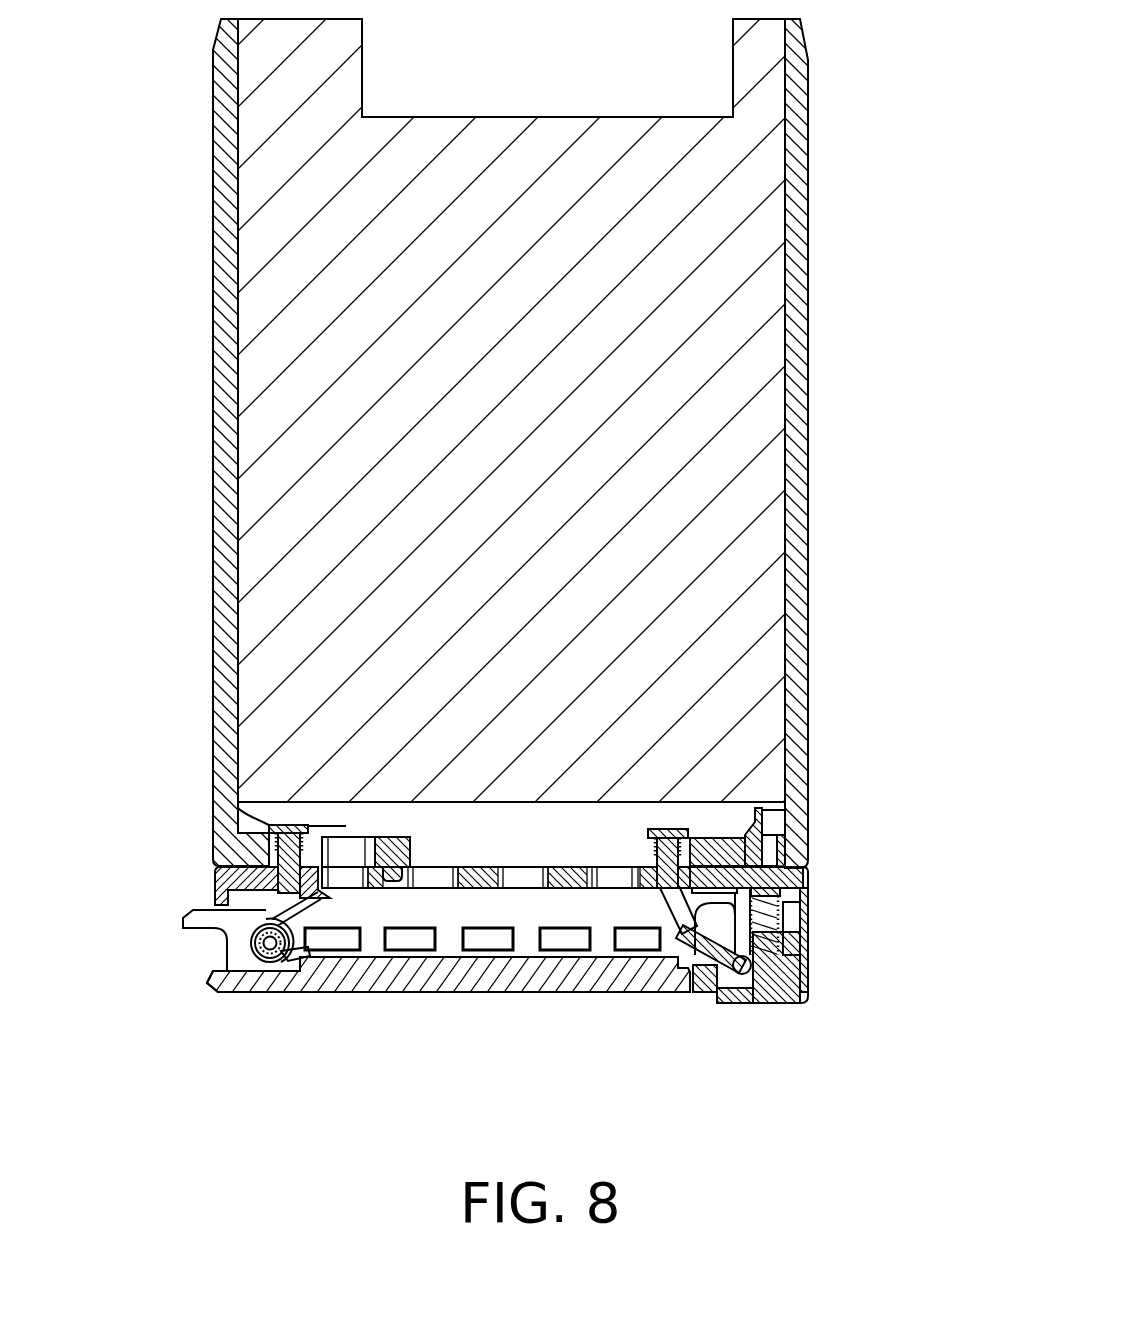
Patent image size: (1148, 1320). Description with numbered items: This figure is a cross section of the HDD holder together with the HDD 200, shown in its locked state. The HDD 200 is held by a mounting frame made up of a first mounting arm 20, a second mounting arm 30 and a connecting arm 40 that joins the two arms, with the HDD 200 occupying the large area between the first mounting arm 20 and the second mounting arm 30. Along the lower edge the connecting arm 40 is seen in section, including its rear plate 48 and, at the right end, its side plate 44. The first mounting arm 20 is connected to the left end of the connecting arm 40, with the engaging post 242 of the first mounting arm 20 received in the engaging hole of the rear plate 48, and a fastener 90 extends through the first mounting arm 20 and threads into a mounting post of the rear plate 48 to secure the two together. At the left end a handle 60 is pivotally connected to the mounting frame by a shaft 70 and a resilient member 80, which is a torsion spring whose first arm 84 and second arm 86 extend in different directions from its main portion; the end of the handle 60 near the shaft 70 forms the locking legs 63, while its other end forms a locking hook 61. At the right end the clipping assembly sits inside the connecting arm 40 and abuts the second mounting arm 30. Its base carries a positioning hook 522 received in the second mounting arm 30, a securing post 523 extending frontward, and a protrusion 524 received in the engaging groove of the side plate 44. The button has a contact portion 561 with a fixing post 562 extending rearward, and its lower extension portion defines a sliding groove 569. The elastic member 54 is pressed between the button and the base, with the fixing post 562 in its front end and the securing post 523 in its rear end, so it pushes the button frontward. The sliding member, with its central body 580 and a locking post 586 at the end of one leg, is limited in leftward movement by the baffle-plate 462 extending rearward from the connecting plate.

The first mounting arm 20 is at (225, 100).
The second mounting arm 30 is at (788, 130).
The HDD 200 is at (568, 182).
The connecting arm 40 is at (340, 917).
The rear plate 48 is at (472, 885).
The engaging post 242 is at (388, 885).
The elastic member 54 is at (803, 870).
The handle 60 is at (397, 977).
The locking hook 61 is at (660, 920).
The locking legs 63 is at (190, 915).
The shaft 70 is at (225, 983).
The resilient member 80 is at (251, 940).
The first arm 84 is at (280, 902).
The second arm 86 is at (290, 962).
The fastener 90 is at (690, 838).
The positioning hook 522 is at (705, 848).
The securing post 523 is at (775, 860).
The protrusion 524 is at (808, 888).
The contact portion 561 is at (790, 990).
The fixing post 562 is at (780, 925).
The sliding groove 569 is at (777, 1007).
The central body 580 is at (680, 945).
The locking post 586 is at (738, 1000).
The baffle-plate 462 is at (697, 980).
The side plate 44 is at (800, 940).